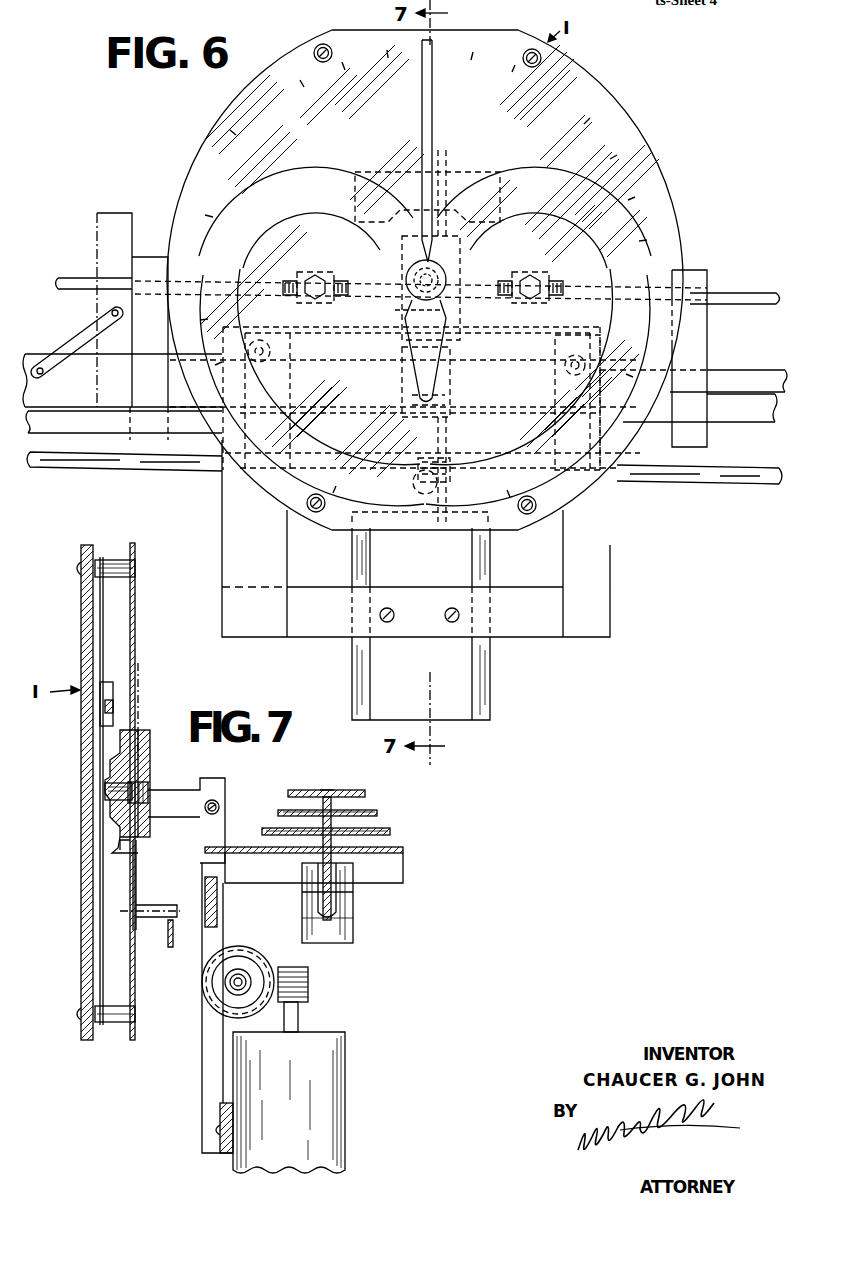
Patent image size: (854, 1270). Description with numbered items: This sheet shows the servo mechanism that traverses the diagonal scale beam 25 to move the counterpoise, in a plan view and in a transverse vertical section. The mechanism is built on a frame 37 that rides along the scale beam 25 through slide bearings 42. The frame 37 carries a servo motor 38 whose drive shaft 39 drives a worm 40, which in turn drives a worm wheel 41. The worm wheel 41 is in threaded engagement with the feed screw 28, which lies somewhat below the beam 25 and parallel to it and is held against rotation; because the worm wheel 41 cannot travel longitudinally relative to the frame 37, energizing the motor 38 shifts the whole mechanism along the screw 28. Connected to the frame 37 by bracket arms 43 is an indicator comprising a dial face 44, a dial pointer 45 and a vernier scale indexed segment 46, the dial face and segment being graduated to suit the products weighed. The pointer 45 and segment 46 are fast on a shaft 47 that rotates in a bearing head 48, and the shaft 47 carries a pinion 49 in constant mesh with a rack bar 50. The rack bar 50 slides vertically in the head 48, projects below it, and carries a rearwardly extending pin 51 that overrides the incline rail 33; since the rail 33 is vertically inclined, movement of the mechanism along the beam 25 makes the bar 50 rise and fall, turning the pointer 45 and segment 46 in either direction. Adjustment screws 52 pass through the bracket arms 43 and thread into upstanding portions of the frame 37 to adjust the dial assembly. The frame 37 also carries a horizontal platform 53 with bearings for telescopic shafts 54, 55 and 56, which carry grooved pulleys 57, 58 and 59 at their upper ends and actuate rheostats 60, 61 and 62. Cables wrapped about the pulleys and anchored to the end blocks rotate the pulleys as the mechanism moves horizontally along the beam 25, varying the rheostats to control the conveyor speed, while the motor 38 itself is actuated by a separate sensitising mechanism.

In FIG. 6, the diagonal scale beam 25 is at (748, 370).
In FIG. 7, the diagonal scale beam 25 is at (220, 895).
In FIG. 6, the feed screw 28 is at (692, 482).
In FIG. 6, the incline rail 33 is at (748, 414).
In FIG. 7, the incline rail 33 is at (170, 940).
In FIG. 6, the frame 37 is at (611, 569).
In FIG. 7, the frame 37 is at (202, 1064).
In FIG. 6, the servo motor 38 is at (491, 690).
In FIG. 7, the servo motor 38 is at (346, 1069).
In FIG. 7, the drive shaft 39 is at (300, 1018).
In FIG. 6, the worm 40 is at (438, 482).
In FIG. 7, the worm 40 is at (308, 983).
In FIG. 6, the worm wheel 41 is at (276, 364).
In FIG. 7, the worm wheel 41 is at (202, 984).
In FIG. 6, the slide bearings 42 is at (576, 372).
In FIG. 6, the bracket arms 43 is at (313, 272).
In FIG. 7, the bracket arms 43 is at (190, 790).
In FIG. 6, the dial face 44 is at (574, 88).
In FIG. 7, the dial face 44 is at (81, 644).
In FIG. 6, the dial pointer 45 is at (432, 122).
In FIG. 7, the dial pointer 45 is at (103, 558).
In FIG. 6, the vernier scale indexed segment 46 is at (542, 172).
In FIG. 7, the vernier scale indexed segment 46 is at (96, 956).
In FIG. 7, the shaft 47 is at (106, 790).
In FIG. 7, the bearing head 48 is at (145, 736).
In FIG. 7, the pinion 49 is at (146, 788).
In FIG. 6, the rack bar 50 is at (447, 160).
In FIG. 7, the rack bar 50 is at (138, 864).
In FIG. 6, the pin 51 is at (447, 398).
In FIG. 7, the pin 51 is at (160, 905).
In FIG. 6, the adjustment screws 52 is at (728, 292).
In FIG. 7, the horizontal platform 53 is at (403, 855).
In FIG. 7, the telescopic shaft 54 is at (345, 800).
In FIG. 7, the telescopic shaft 55 is at (360, 822).
In FIG. 7, the telescopic shaft 56 is at (378, 845).
In FIG. 6, the grooved pulley 57 is at (460, 281).
In FIG. 7, the grooved pulley 57 is at (298, 792).
In FIG. 6, the grooved pulley 58 is at (468, 300).
In FIG. 7, the grooved pulley 58 is at (282, 813).
In FIG. 6, the grooved pulley 59 is at (368, 316).
In FIG. 7, the grooved pulley 59 is at (264, 834).
In FIG. 7, the rheostat 60 is at (344, 928).
In FIG. 7, the rheostat 61 is at (344, 904).
In FIG. 7, the rheostat 62 is at (340, 884).